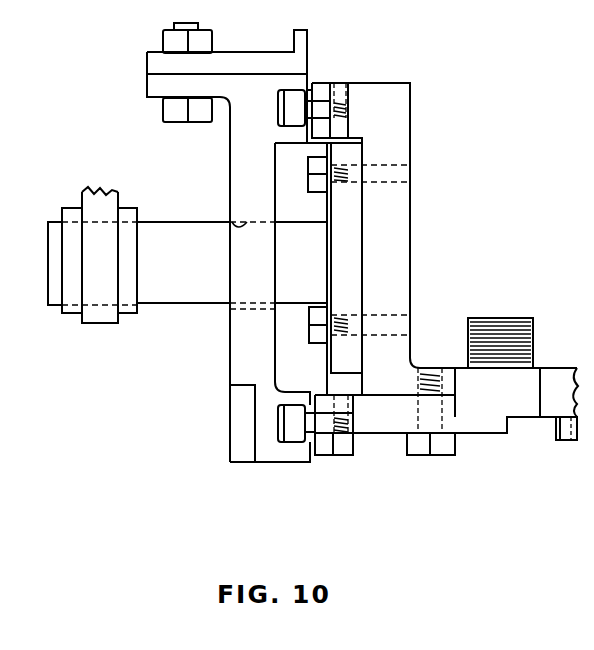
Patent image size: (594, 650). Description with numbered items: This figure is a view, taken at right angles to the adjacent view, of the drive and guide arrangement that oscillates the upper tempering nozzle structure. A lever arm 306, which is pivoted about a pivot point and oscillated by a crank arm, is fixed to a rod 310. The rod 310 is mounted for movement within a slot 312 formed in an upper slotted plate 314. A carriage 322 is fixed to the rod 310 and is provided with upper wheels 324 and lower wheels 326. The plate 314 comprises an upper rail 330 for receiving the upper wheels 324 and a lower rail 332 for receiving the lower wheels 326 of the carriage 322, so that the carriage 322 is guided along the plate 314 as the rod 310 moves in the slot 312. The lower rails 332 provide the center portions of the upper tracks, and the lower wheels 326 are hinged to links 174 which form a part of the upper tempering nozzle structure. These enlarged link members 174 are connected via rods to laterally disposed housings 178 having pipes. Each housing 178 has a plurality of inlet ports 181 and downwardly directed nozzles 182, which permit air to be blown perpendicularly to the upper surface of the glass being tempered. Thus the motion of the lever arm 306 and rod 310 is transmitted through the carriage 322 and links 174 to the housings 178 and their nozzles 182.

The lever arm 306 is at (98, 195).
The rod 310 is at (232, 265).
The slot 312 is at (232, 226).
The upper slotted plate 314 is at (230, 160).
The carriage 322 is at (412, 114).
The upper wheels 324 is at (291, 97).
The lower wheels 326 is at (302, 438).
The upper rail 330 is at (278, 100).
The lower rail 332 is at (238, 432).
The link member 174 is at (322, 448).
The housing 178 is at (521, 414).
The inlet ports 181 is at (483, 318).
The nozzles 182 is at (557, 435).